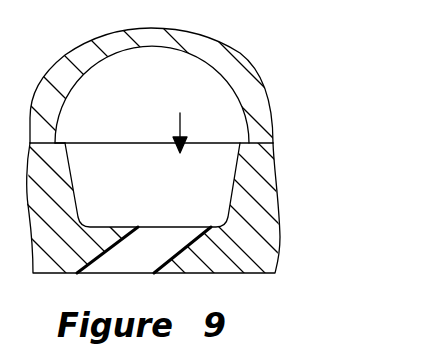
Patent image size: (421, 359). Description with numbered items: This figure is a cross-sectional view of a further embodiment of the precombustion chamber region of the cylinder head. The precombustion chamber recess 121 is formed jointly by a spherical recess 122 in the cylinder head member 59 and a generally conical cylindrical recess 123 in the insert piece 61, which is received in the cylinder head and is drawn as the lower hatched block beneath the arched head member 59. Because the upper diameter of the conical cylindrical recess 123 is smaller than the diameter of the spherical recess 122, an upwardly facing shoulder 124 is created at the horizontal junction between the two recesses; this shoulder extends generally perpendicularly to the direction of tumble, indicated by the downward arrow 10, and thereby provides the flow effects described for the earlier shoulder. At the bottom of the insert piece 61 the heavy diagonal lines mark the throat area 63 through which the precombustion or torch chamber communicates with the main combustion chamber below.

The cylinder head member 59 is at (233, 70).
The spherical recess 122 is at (231, 88).
The upwardly facing shoulder 124 is at (56, 142).
The precombustion chamber recess 121 is at (152, 137).
The direction arrow 10 is at (196, 128).
The conical cylindrical recess 123 is at (78, 203).
The throat area 63 is at (183, 250).
The insert piece 61 is at (256, 232).